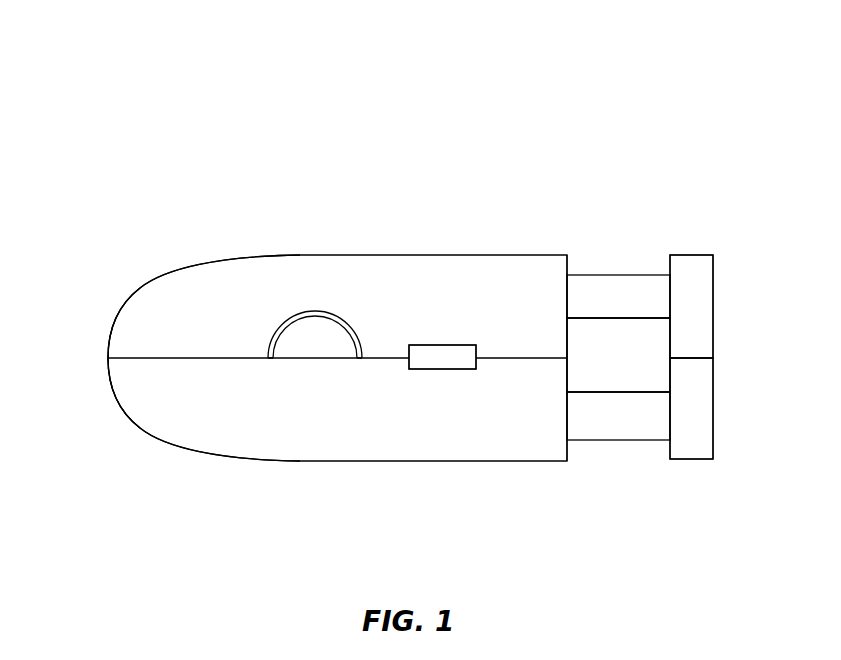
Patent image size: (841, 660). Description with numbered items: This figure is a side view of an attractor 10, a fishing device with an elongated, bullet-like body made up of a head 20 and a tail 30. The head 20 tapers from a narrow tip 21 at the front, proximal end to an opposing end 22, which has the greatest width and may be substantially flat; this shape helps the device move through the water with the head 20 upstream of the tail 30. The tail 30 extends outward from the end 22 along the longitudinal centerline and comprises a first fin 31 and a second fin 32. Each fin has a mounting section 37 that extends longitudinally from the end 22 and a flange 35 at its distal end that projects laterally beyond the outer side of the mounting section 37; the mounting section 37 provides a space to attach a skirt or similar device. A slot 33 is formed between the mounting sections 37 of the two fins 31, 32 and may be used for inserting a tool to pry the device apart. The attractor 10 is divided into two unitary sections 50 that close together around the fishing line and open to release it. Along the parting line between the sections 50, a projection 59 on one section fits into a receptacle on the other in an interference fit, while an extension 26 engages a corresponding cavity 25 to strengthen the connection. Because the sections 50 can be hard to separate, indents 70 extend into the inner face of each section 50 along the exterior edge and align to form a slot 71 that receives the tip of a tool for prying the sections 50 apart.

The attractor 10 is at (262, 108).
The head 20 is at (157, 400).
The tip 21 is at (108, 338).
The end 22 is at (567, 265).
The cavity 25 is at (313, 313).
The extension 26 is at (306, 362).
The tail 30 is at (688, 268).
The first fin 31 is at (602, 290).
The second fin 32 is at (600, 422).
The slot 33 is at (617, 365).
The flange 35 is at (700, 292).
The mounting section 37 is at (635, 293).
The section 50 is at (135, 325).
The projection 59 is at (196, 357).
The indent 70 is at (428, 345).
The slot 71 is at (447, 360).